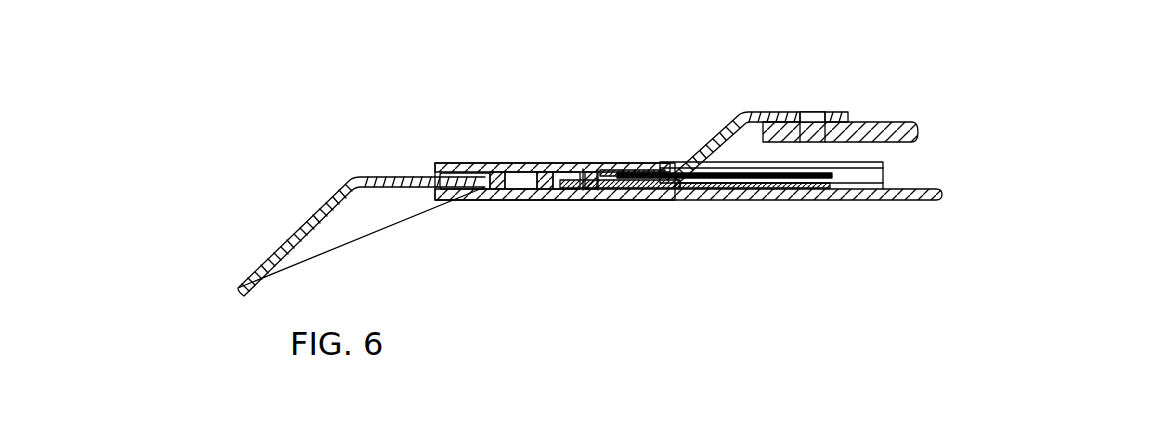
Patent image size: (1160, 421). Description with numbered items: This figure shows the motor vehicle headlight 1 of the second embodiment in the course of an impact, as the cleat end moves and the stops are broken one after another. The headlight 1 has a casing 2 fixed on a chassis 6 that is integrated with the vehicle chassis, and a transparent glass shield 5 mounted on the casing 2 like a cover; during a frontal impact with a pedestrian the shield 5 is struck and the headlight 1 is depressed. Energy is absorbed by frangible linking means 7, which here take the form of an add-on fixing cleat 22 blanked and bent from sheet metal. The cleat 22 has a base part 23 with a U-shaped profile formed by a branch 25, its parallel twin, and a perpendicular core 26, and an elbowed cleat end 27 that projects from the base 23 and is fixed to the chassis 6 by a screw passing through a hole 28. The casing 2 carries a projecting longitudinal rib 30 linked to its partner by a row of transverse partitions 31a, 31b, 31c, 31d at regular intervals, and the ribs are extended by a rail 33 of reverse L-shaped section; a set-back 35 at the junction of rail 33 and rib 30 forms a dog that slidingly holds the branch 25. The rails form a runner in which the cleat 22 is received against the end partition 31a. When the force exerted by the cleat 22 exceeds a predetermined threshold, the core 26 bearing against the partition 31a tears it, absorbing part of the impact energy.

The headlight 1 is at (262, 155).
The casing 2 is at (905, 200).
The transparent glass shield 5 is at (268, 254).
The chassis 6 is at (892, 122).
The frangible linking means 7 is at (645, 134).
The add-on fixing cleat 22 is at (772, 112).
The base part 23 is at (662, 189).
The branch 25 is at (757, 200).
The core 26 is at (627, 168).
The cleat end 27 is at (738, 112).
The hole 28 is at (813, 110).
The projecting longitudinal rib 30 is at (508, 163).
The end partition 31a is at (603, 163).
The partition 31b is at (590, 163).
The partition 31c is at (548, 200).
The partition 31d is at (510, 195).
The rail 33 is at (884, 163).
The set-back 35 is at (648, 163).